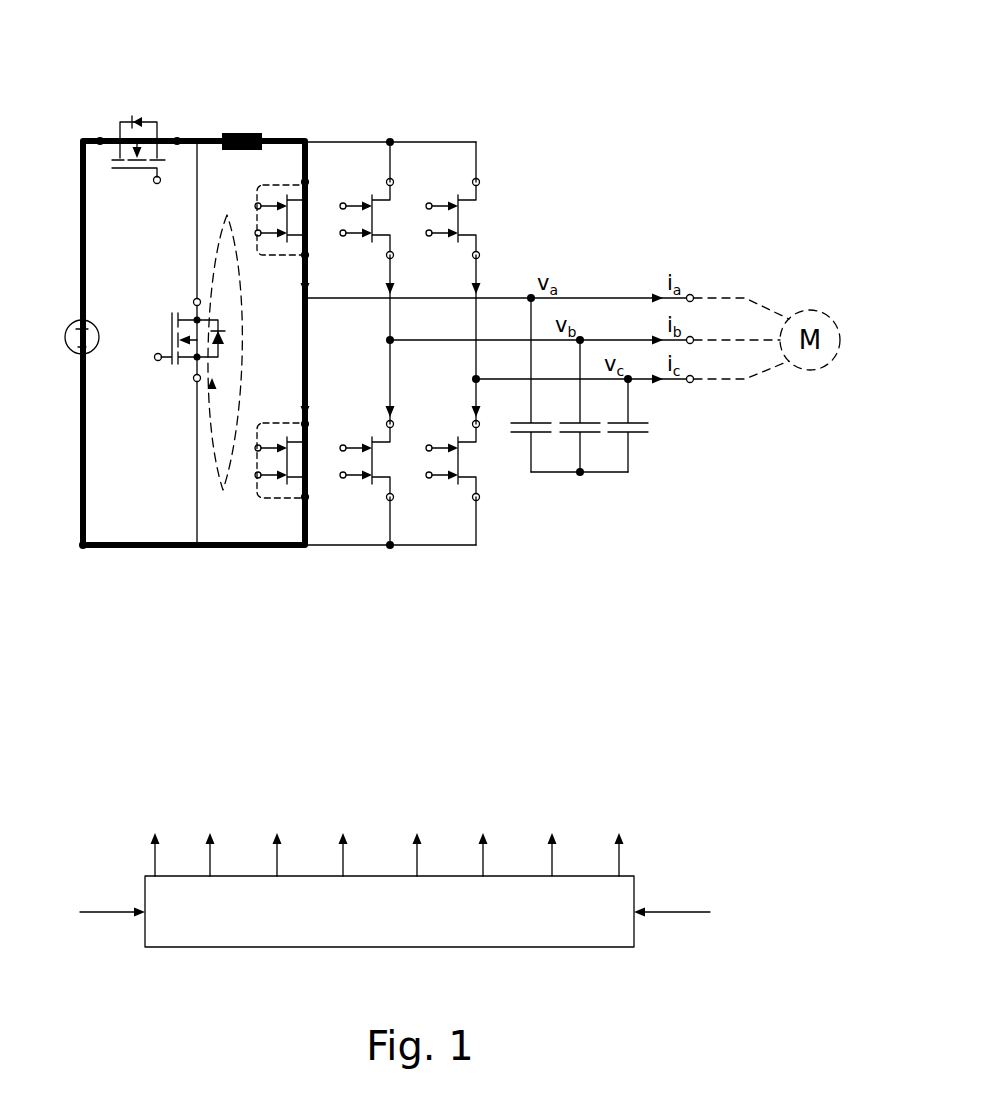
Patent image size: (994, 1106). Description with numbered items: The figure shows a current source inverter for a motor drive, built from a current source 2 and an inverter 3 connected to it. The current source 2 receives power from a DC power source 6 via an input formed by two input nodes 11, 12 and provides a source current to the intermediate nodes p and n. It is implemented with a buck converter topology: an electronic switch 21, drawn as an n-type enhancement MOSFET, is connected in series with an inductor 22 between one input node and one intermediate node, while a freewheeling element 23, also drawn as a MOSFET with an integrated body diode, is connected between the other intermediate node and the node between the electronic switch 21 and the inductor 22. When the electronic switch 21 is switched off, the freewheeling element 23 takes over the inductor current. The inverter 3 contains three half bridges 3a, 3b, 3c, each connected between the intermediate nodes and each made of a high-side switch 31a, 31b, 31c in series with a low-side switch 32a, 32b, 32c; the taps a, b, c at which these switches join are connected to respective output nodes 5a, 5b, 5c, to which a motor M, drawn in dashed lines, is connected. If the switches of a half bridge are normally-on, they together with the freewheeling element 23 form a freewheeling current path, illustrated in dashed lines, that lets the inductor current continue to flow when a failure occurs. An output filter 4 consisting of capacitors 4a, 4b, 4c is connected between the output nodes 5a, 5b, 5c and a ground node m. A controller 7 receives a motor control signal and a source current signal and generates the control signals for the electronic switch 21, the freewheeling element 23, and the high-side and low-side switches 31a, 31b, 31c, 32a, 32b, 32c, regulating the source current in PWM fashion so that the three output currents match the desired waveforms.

The current source 2 is at (180, 100).
The inverter 3 is at (356, 100).
The output filter 4 is at (610, 272).
The power source 6 is at (65, 333).
The controller 7 is at (636, 882).
The input node 11 is at (89, 130).
The input node 12 is at (87, 563).
The electronic switch 21 is at (138, 215).
The inductor 22 is at (245, 155).
The freewheeling element 23 is at (190, 306).
The first half bridge 3a is at (305, 580).
The second half bridge 3b is at (393, 580).
The third half bridge 3c is at (478, 580).
The high-side switch 31a is at (280, 222).
The high-side switch 31b is at (380, 242).
The high-side switch 31c is at (477, 218).
The low-side switch 32a is at (277, 463).
The low-side switch 32b is at (380, 437).
The low-side switch 32c is at (465, 460).
The capacitor 4a is at (536, 385).
The capacitor 4b is at (585, 406).
The capacitor 4c is at (632, 425).
The first output node 5a is at (709, 291).
The second output node 5b is at (709, 331).
The third output node 5c is at (708, 371).